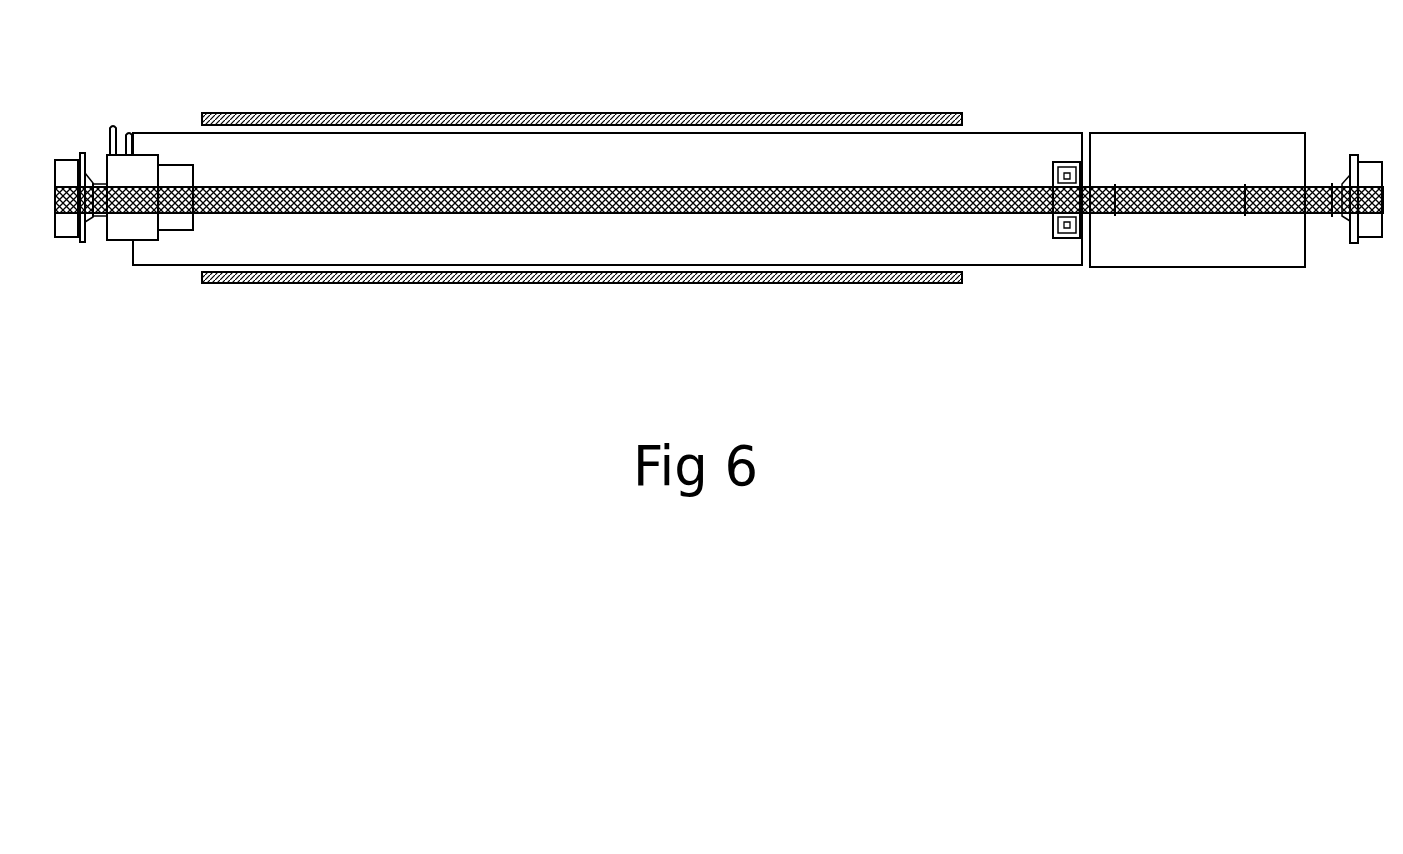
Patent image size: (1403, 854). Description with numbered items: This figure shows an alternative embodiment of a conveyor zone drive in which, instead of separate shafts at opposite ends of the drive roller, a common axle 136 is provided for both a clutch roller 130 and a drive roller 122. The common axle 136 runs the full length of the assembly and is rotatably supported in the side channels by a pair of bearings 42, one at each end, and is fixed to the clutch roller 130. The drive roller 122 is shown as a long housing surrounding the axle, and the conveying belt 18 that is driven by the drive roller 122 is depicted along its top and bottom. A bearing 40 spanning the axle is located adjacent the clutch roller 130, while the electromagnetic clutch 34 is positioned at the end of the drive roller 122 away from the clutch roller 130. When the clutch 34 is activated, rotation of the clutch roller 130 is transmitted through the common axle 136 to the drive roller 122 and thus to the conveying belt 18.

The conveying belt 18 is at (782, 112).
The electromagnetic clutch 34 is at (175, 163).
The bearing 40 is at (1063, 158).
The bearing 42 is at (67, 240).
The drive roller 122 is at (998, 263).
The clutch roller 130 is at (1183, 133).
The common axle 136 is at (975, 185).